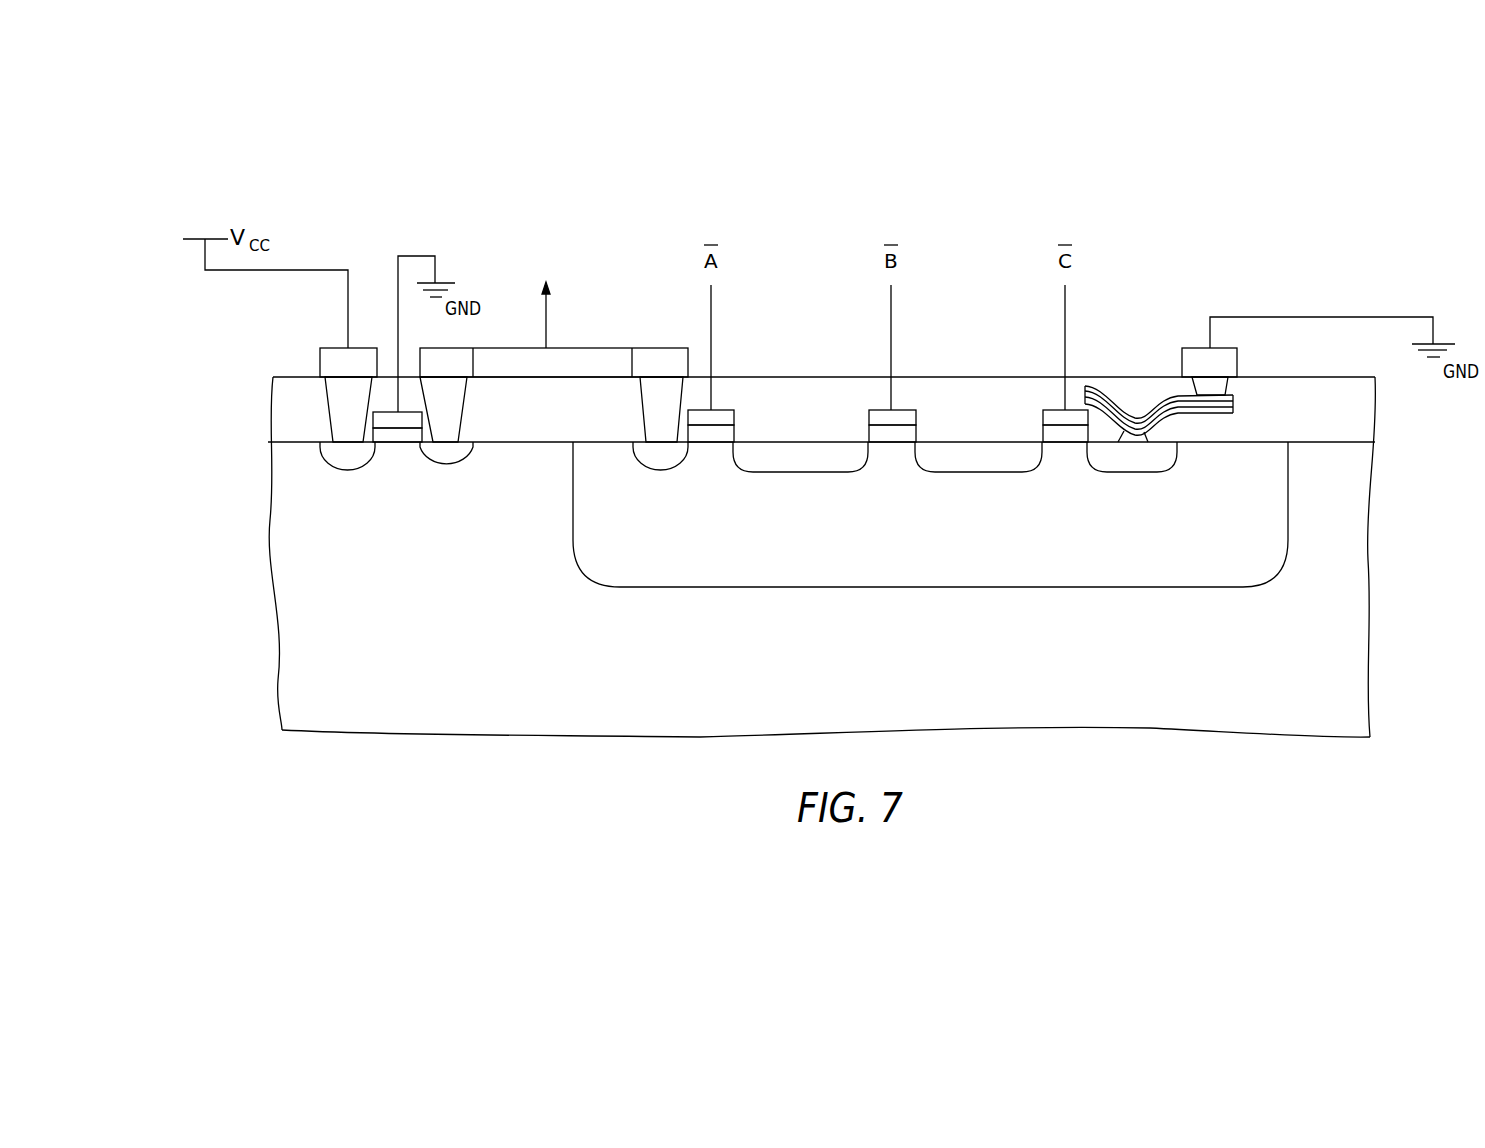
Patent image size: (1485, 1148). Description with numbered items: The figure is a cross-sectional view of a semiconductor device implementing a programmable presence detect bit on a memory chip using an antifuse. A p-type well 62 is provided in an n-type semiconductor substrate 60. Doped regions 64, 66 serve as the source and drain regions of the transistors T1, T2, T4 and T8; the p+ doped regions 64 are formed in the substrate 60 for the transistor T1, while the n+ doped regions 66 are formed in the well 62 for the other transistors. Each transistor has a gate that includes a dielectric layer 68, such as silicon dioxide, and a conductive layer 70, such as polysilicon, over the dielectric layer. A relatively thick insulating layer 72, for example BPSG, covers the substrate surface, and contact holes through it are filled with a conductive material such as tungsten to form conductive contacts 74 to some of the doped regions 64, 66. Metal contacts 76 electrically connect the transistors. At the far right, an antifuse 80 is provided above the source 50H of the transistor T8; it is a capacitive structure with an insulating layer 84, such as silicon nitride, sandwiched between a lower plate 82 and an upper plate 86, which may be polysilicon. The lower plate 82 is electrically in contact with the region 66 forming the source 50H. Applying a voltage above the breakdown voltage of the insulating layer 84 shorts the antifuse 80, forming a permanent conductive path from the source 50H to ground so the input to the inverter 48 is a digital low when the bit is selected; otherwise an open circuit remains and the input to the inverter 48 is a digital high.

The inverter 48 is at (548, 270).
The source of transistor T8 50H is at (1134, 492).
The semiconductor substrate 60 is at (1352, 666).
The p-type well 62 is at (1265, 525).
The p+ doped regions 64 is at (340, 458).
The n+ doped regions 66 is at (650, 458).
The dielectric layer 68 is at (387, 435).
The conductive layer 70 is at (373, 418).
The insulating layer 72 is at (1360, 413).
The conductive contacts 74 is at (340, 393).
The metal contacts 76 is at (333, 362).
The antifuse 80 is at (1194, 427).
The lower plate 82 is at (1232, 410).
The insulating layer 84 is at (1232, 402).
The upper plate 86 is at (1238, 397).
The transistor T1 is at (405, 485).
The transistor T2 is at (714, 483).
The transistor T4 is at (894, 483).
The transistor T8 is at (1067, 483).